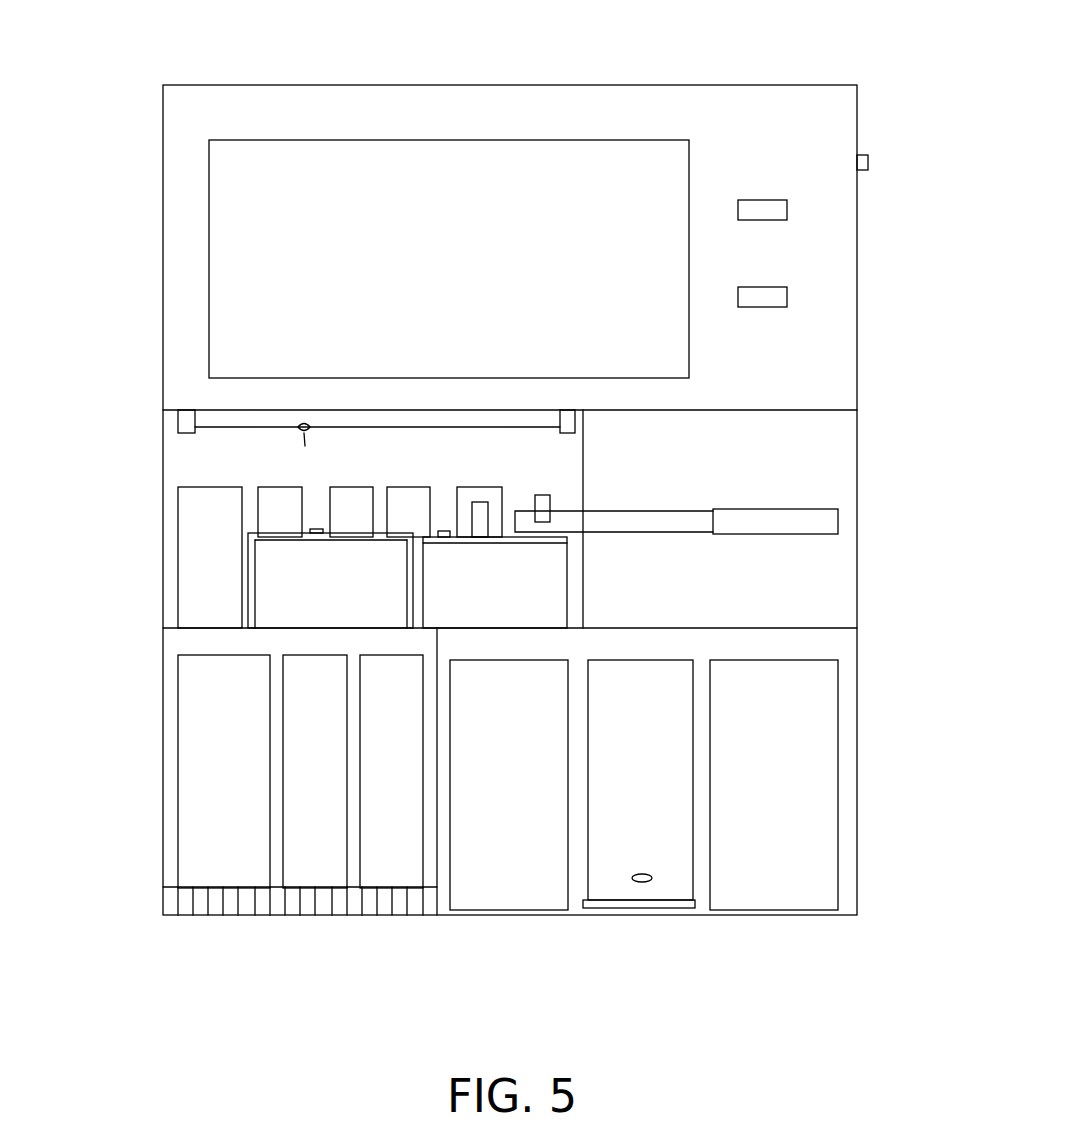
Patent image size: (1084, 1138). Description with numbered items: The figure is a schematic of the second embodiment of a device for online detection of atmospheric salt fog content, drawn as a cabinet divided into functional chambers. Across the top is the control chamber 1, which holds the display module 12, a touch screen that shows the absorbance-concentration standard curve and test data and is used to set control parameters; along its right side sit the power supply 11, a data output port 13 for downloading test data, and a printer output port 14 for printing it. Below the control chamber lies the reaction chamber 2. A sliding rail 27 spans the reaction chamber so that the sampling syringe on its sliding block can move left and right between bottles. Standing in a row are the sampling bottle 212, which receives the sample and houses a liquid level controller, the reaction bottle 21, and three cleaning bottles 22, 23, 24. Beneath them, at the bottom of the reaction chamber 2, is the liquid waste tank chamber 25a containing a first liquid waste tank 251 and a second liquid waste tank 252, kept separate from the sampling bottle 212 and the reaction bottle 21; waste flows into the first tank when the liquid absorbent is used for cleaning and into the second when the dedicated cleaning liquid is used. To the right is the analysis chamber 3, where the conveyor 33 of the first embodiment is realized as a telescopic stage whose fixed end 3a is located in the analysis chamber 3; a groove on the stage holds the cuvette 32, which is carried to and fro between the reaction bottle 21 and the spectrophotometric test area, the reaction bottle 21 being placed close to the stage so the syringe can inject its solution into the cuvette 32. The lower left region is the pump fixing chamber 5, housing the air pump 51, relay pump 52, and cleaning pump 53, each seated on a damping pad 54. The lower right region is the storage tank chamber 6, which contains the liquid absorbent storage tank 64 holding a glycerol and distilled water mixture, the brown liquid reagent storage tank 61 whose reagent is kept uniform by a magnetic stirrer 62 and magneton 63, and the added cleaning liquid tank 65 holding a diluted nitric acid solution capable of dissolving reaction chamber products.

The control chamber 1 is at (165, 133).
The power supply 11 is at (787, 297).
The display module 12 is at (370, 140).
The data output port 13 is at (870, 158).
The printer output port 14 is at (787, 212).
The reaction chamber 2 is at (165, 495).
The reaction bottle 21 is at (475, 502).
The sampling bottle 212 is at (185, 487).
The cleaning bottle 22 is at (260, 487).
The cleaning bottle 23 is at (342, 487).
The cleaning bottle 24 is at (410, 487).
The first liquid waste tank 251 is at (465, 572).
The second liquid waste tank 252 is at (275, 610).
The liquid waste tank chamber 25a is at (585, 615).
The sliding rail 27 is at (487, 423).
The analysis chamber 3 is at (857, 462).
The cuvette 32 is at (548, 498).
The conveyor 33 is at (665, 512).
The fixed end 3a is at (838, 522).
The pump fixing chamber 5 is at (163, 702).
The air pump 51 is at (178, 803).
The relay pump 52 is at (285, 857).
The cleaning pump 53 is at (360, 848).
The damping pad 54 is at (193, 888).
The storage tank chamber 6 is at (857, 782).
The liquid reagent storage tank 61 is at (692, 867).
The magnetic stirrer 62 is at (612, 910).
The magneton 63 is at (642, 882).
The liquid absorbent storage tank 64 is at (515, 910).
The cleaning liquid tank 65 is at (838, 855).